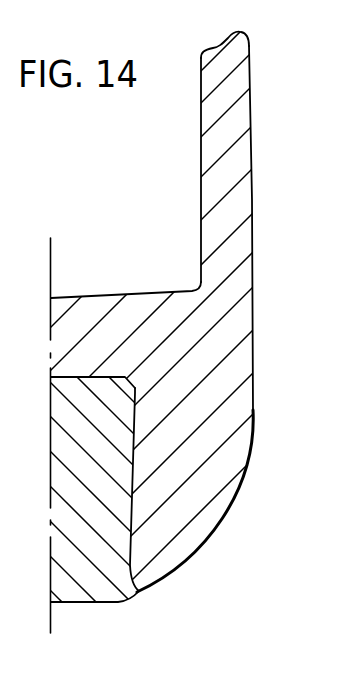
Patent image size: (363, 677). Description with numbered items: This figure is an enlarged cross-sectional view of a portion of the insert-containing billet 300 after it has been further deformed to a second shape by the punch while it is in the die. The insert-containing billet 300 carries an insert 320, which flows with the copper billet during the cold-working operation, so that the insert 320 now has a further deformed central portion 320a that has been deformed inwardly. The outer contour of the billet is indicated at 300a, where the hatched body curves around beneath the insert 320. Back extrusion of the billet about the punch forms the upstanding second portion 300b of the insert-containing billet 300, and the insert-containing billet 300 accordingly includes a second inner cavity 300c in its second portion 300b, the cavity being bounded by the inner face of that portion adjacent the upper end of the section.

The insert-containing billet 300 is at (228, 467).
The curved outer surface of spacer member 300a is at (182, 541).
The second portion 300b is at (240, 212).
The second inner cavity 300c is at (207, 141).
The insert 320 is at (83, 590).
The central portion 320a is at (130, 477).